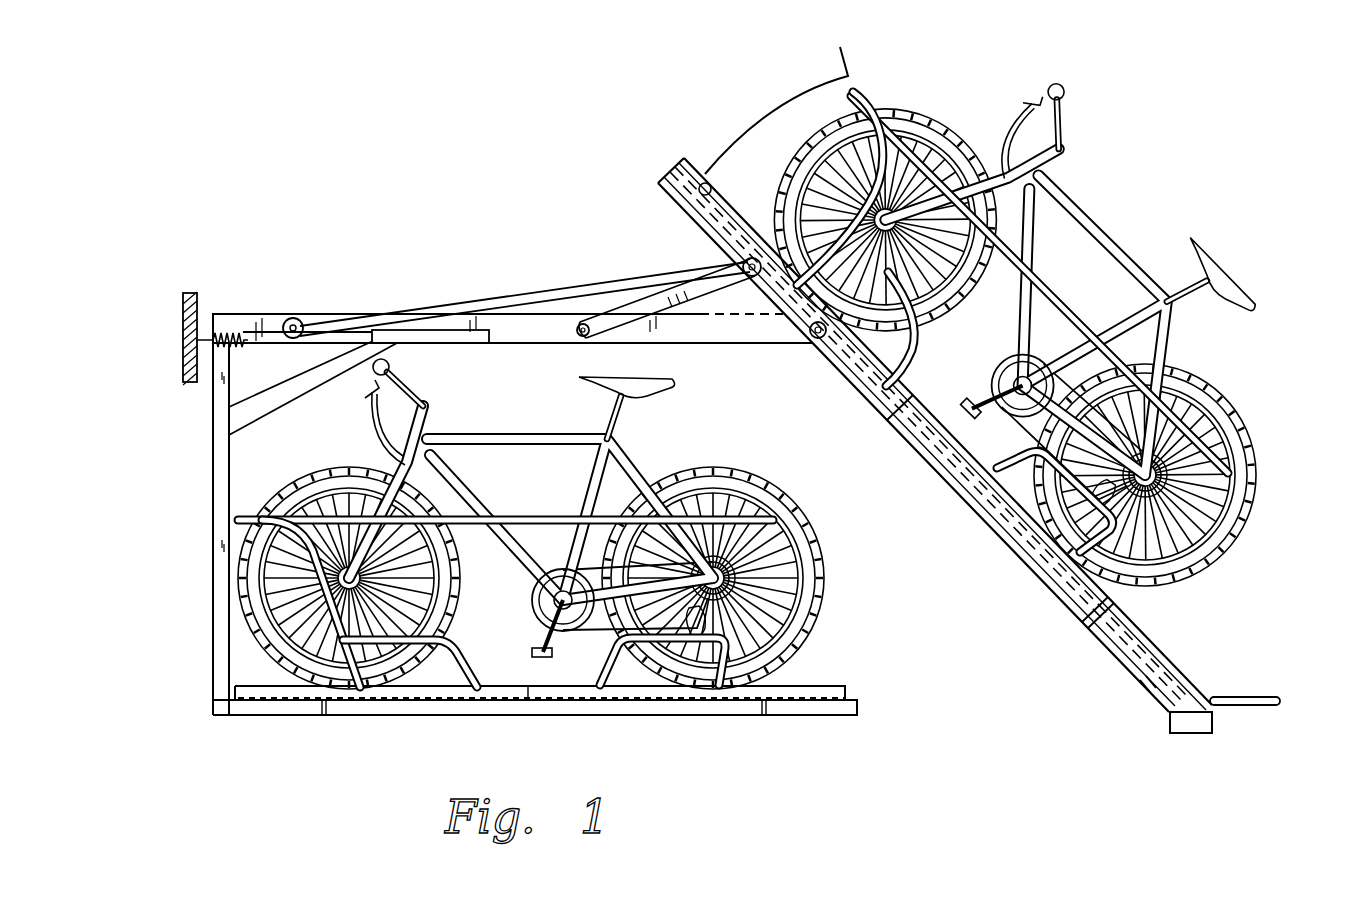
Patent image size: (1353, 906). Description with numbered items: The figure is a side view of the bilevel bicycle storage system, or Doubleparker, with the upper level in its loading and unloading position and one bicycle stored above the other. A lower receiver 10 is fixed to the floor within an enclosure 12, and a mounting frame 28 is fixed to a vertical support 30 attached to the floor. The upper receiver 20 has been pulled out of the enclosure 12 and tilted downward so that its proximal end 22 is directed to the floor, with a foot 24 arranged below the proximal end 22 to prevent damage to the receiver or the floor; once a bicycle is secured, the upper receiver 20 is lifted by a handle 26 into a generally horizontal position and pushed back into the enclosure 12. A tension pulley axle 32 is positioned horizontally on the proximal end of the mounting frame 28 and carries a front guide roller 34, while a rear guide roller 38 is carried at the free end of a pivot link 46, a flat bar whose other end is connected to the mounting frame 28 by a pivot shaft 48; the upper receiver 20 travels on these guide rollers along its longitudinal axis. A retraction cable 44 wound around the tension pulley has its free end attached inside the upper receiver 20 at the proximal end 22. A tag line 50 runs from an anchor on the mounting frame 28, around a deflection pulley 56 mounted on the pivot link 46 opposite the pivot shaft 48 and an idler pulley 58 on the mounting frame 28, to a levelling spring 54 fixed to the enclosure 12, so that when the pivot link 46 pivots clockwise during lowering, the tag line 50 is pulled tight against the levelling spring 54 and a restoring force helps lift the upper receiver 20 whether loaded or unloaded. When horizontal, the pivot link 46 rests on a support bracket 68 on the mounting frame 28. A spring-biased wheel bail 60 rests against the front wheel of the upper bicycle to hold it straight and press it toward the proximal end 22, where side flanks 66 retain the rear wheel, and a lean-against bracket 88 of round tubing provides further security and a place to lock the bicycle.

The lower receiver 10 is at (865, 700).
The enclosure 12 is at (190, 385).
The upper receiver 20 is at (1058, 598).
The proximal end 22 is at (1160, 695).
The foot 24 is at (1200, 735).
The handle 26 is at (1250, 698).
The mounting frame 28 is at (748, 335).
The vertical support 30 is at (232, 495).
The tension pulley axle 32 is at (820, 350).
The front guide roller 34 is at (905, 356).
The rear guide roller 38 is at (763, 260).
The retraction cable 44 is at (932, 440).
The pivot link 46 is at (660, 320).
The pivot shaft 48 is at (578, 337).
The tag line 50 is at (538, 298).
The levelling spring 54 is at (226, 333).
The deflection pulley 56 is at (738, 263).
The idler pulley 58 is at (297, 320).
The wheel bail 60 is at (770, 110).
The side flanks 66 is at (1000, 505).
The support bracket 68 is at (455, 345).
The lean-against bracket 88 is at (812, 647).